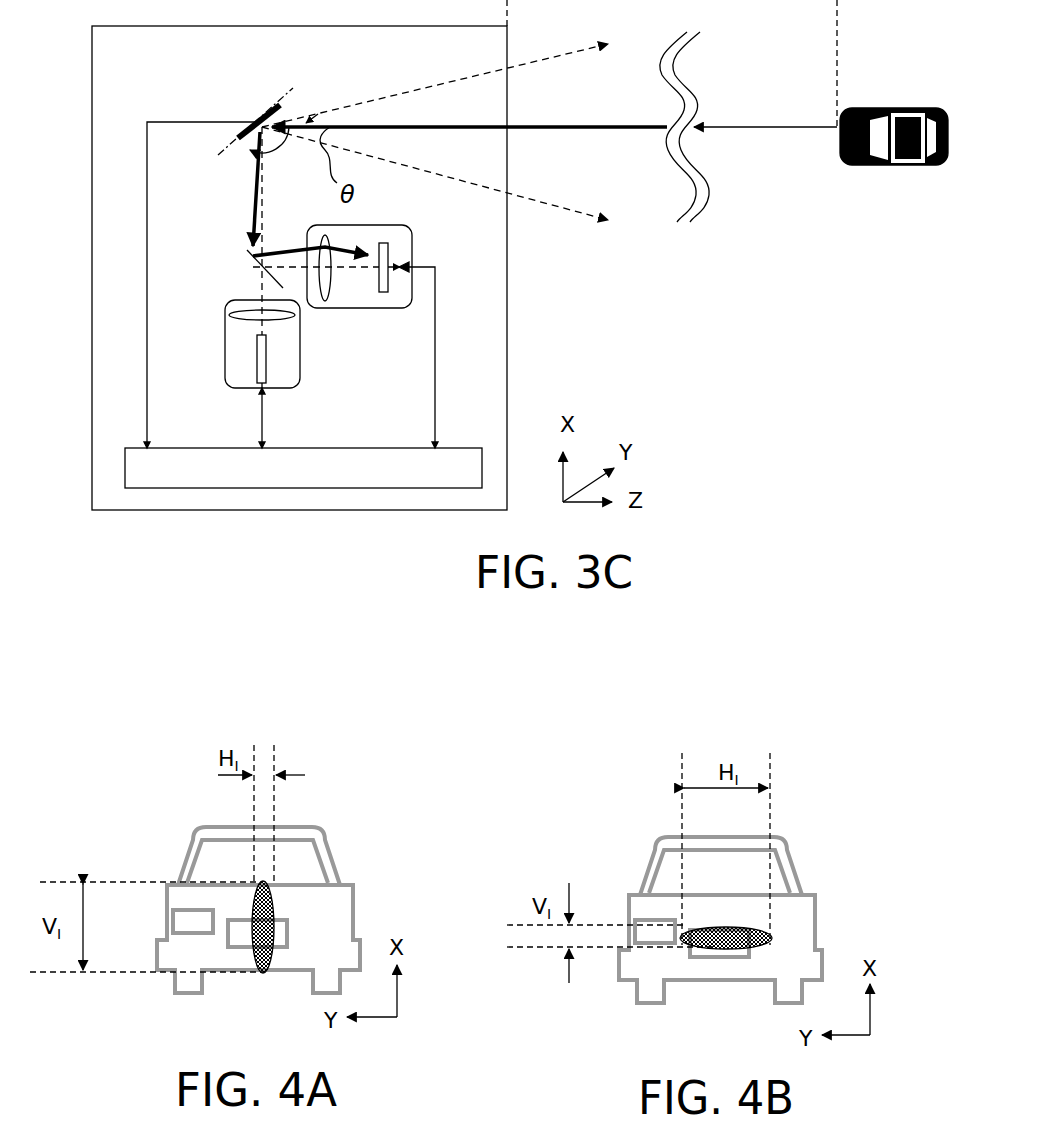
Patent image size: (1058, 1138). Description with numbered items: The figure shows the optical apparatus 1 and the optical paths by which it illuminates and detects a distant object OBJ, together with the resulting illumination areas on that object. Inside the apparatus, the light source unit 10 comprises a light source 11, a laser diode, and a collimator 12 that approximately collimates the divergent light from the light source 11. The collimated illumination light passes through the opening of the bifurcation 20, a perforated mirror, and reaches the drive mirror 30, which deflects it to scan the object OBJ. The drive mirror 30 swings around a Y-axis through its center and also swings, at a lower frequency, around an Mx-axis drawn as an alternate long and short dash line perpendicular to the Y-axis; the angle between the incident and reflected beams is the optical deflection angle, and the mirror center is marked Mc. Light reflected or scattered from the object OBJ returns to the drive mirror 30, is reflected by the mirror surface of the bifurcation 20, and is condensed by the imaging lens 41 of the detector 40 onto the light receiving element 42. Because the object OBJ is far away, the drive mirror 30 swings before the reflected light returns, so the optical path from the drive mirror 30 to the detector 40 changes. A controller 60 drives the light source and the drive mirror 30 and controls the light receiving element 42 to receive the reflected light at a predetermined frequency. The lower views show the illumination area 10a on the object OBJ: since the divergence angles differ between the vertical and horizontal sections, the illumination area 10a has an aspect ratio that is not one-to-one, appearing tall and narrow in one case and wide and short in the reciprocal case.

In FIG. 3C, the optical apparatus 1 is at (90, 102).
In FIG. 3C, the light source unit 10 is at (228, 390).
In FIG. 3C, the light source 11 is at (265, 362).
In FIG. 3C, the collimator 12 is at (245, 322).
In FIG. 3C, the bifurcation 20 is at (252, 262).
In FIG. 3C, the drive mirror 30 is at (273, 110).
In FIG. 3C, the detector 40 is at (372, 310).
In FIG. 3C, the imaging lens 41 is at (340, 240).
In FIG. 3C, the light receiving element 42 is at (415, 258).
In FIG. 3C, the controller 60 is at (127, 448).
In FIG. 4A, the illumination area 10a is at (273, 903).
In FIG. 4B, the illumination area 10a is at (733, 913).
In FIG. 3C, the object OBJ is at (882, 110).
In FIG. 4A, the object OBJ is at (315, 830).
In FIG. 4B, the object OBJ is at (773, 837).
In FIG. 3C, the Mx-axis Mx is at (280, 98).
In FIG. 3C, the mirror center Mc is at (300, 97).